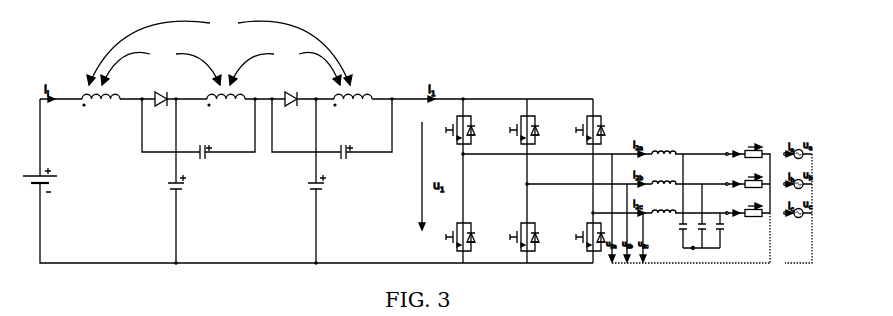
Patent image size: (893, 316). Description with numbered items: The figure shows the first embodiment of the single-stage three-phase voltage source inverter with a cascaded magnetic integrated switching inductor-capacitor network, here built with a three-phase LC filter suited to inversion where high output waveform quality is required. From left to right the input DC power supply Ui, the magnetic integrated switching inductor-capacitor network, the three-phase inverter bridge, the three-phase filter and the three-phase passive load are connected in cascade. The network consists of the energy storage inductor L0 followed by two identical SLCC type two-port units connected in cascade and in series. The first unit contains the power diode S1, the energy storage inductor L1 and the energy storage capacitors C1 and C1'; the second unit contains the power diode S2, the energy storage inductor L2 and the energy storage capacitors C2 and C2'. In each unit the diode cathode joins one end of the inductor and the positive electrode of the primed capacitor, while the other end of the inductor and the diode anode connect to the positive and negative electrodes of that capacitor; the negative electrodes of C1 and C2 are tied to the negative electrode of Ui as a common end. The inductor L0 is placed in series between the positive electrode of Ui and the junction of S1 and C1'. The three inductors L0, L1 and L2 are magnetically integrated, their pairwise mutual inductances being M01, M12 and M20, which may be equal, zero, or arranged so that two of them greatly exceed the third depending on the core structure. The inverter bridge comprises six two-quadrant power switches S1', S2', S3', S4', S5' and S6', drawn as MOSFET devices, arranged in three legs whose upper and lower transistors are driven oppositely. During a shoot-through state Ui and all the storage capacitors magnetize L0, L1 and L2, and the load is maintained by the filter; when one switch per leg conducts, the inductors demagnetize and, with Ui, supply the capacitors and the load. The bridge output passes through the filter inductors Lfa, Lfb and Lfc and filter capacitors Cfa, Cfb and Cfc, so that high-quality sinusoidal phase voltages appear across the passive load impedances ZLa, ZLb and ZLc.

The input DC voltage Ui is at (32, 181).
The energy storage inductor L0 is at (101, 108).
The energy storage inductor L1 is at (226, 109).
The energy storage inductor L2 is at (353, 109).
The power diode S1 is at (160, 89).
The power diode S2 is at (291, 89).
The energy storage capacitor C1 is at (169, 181).
The energy storage capacitor C2 is at (309, 181).
The energy storage capacitor C1' is at (198, 129).
The energy storage capacitor C2' is at (332, 129).
The mutual inductance M20 is at (219, 53).
The mutual inductance M01 is at (161, 68).
The mutual inductance M12 is at (285, 68).
The two-quadrant power switch S1' is at (453, 130).
The two-quadrant power switch S2' is at (583, 237).
The two-quadrant power switch S3' is at (517, 130).
The two-quadrant power switch S4' is at (453, 237).
The two-quadrant power switch S5' is at (583, 130).
The two-quadrant power switch S6' is at (517, 237).
The filter inductor Lfa is at (664, 147).
The filter inductor Lfb is at (664, 177).
The filter inductor Lfc is at (664, 206).
The filter capacitor Cfa is at (677, 201).
The filter capacitor Cfb is at (697, 216).
The filter capacitor Cfc is at (715, 230).
The three-phase output impedance of passive load ZLa is at (748, 174).
The three-phase output impedance of passive load ZLb is at (748, 183).
The three-phase output impedance of passive load ZLc is at (748, 212).